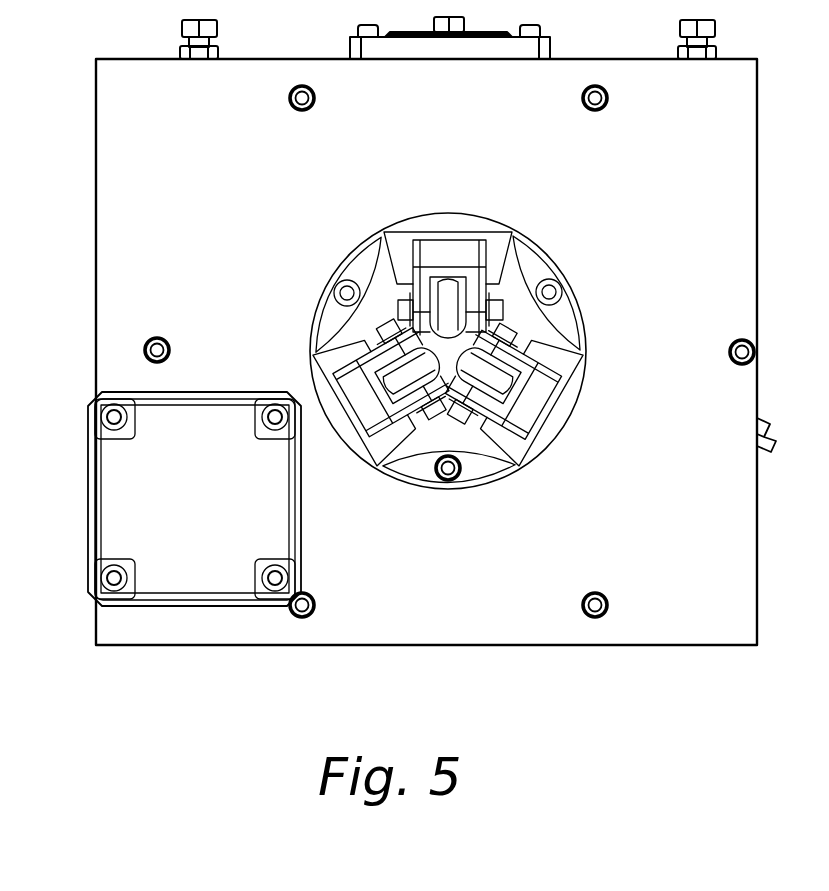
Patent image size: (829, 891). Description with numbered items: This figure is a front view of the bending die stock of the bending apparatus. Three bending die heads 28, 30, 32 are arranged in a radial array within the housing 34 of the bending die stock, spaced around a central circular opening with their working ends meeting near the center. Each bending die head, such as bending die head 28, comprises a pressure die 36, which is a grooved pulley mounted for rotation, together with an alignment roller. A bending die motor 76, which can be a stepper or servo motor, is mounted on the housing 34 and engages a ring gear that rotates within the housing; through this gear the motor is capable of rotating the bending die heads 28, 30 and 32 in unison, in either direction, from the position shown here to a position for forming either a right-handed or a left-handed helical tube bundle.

The bending die head 28 is at (398, 250).
The bending die head 30 is at (337, 354).
The bending die head 32 is at (566, 353).
The housing 34 is at (135, 240).
The pressure die 36 is at (448, 296).
The bending die motor 76 is at (125, 493).